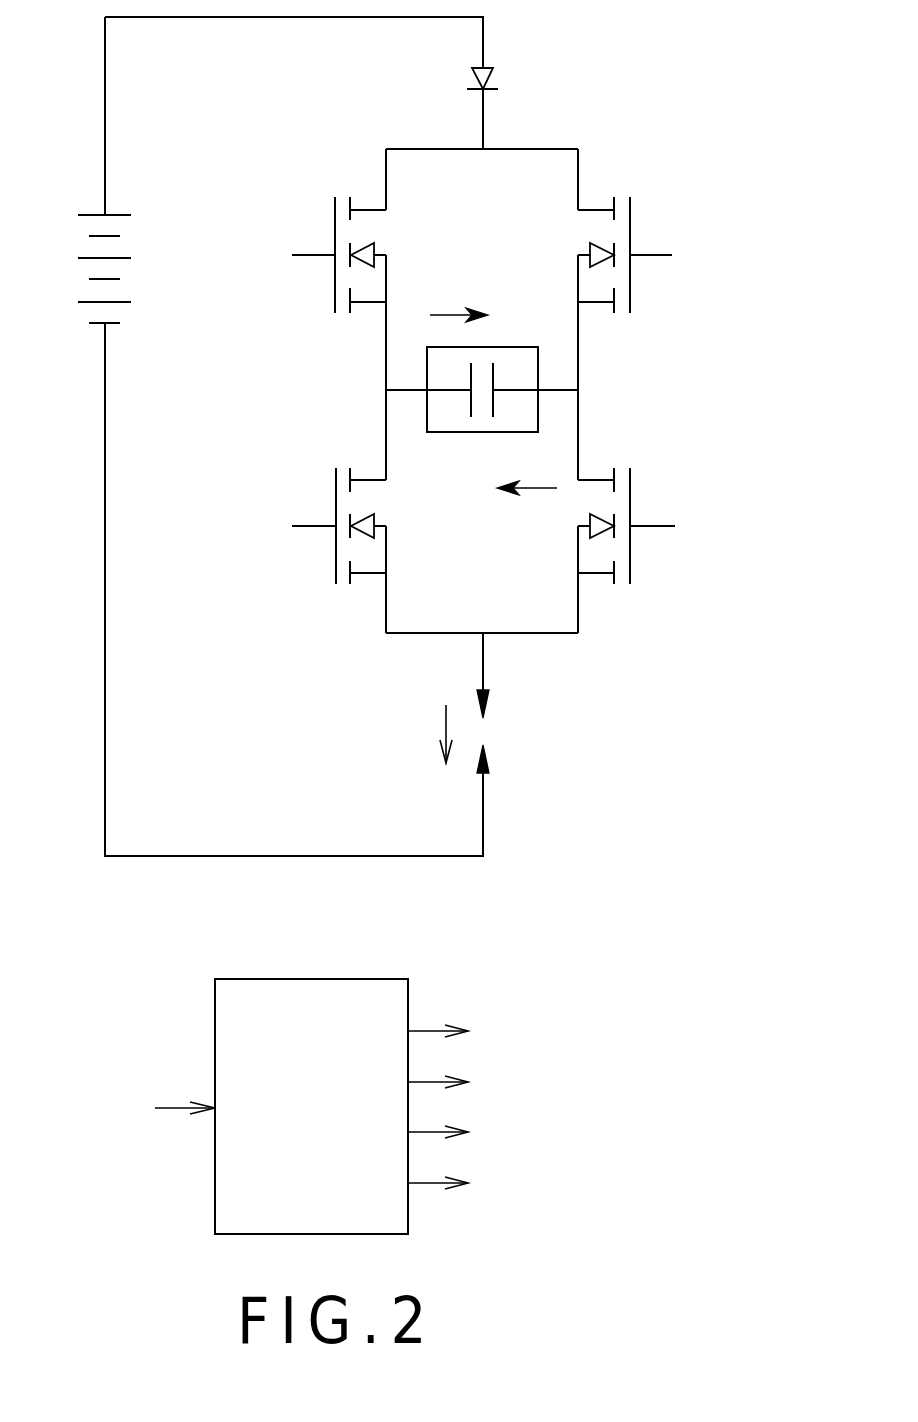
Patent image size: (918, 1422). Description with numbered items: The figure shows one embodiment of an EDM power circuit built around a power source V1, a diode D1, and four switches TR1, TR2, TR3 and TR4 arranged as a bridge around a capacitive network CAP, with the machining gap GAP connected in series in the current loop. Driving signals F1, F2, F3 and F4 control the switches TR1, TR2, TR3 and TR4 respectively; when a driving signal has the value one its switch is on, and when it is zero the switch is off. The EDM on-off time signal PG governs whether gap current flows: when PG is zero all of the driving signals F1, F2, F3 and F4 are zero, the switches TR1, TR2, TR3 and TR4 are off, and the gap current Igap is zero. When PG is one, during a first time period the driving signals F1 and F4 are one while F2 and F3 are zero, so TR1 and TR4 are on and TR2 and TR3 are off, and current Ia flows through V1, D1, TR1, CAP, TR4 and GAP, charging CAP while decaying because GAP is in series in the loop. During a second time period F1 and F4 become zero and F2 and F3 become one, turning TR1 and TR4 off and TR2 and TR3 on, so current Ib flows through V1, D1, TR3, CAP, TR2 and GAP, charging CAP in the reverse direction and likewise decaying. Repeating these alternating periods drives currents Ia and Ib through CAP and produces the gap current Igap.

The power source V1 is at (92, 216).
The diode D1 is at (490, 86).
The switch TR1 is at (335, 213).
The switch TR2 is at (336, 476).
The switch TR3 is at (630, 203).
The switch TR4 is at (632, 481).
The capacitive network CAP is at (528, 433).
The gap GAP is at (481, 733).
The driving signal F1 is at (286, 257).
The driving signal F2 is at (287, 530).
The driving signal F3 is at (674, 257).
The driving signal F4 is at (672, 529).
The current Ia is at (475, 314).
The current Ib is at (507, 489).
The gap current Igap is at (401, 734).
The EDM ON-OFF TIME signal PG is at (311, 1106).